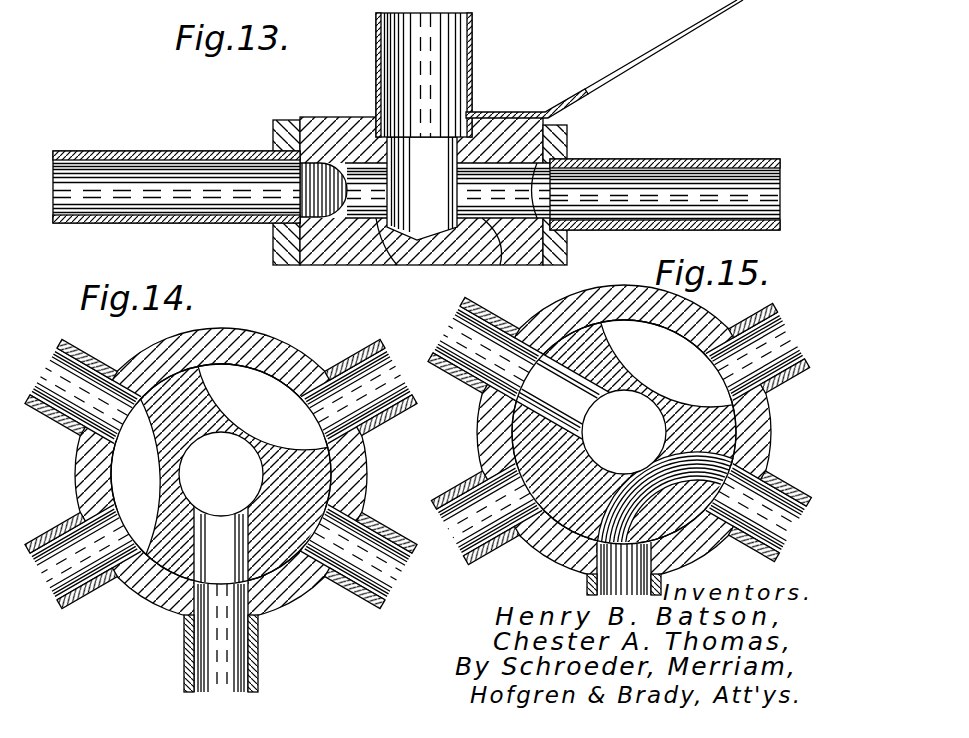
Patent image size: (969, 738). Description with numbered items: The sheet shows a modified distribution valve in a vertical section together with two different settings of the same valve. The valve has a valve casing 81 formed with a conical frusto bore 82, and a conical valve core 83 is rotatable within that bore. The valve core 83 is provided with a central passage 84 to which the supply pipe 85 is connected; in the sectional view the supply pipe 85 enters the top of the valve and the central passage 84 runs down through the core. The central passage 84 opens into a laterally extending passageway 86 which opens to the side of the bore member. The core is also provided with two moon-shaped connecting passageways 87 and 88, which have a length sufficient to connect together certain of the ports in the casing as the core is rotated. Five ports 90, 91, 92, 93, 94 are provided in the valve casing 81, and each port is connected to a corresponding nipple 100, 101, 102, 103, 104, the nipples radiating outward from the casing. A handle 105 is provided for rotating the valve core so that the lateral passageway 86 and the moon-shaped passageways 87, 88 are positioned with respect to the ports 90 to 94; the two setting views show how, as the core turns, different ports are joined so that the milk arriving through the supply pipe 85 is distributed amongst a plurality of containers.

In FIG. 13, the valve casing 81 is at (569, 141).
In FIG. 14, the valve casing 81 is at (293, 360).
In FIG. 15, the valve casing 81 is at (602, 303).
In FIG. 13, the conical frusto bore 82 is at (318, 118).
In FIG. 13, the conical valve core 83 is at (352, 135).
In FIG. 14, the conical valve core 83 is at (303, 490).
In FIG. 15, the conical valve core 83 is at (705, 432).
In FIG. 13, the central passage 84 is at (470, 108).
In FIG. 14, the central passage 84 is at (200, 437).
In FIG. 15, the central passage 84 is at (618, 477).
In FIG. 13, the supply pipe 85 is at (472, 33).
In FIG. 13, the laterally extending passageway 86 is at (490, 263).
In FIG. 14, the laterally extending passageway 86 is at (250, 548).
In FIG. 15, the laterally extending passageway 86 is at (530, 413).
In FIG. 14, the moon-shaped connecting passageway 87 is at (157, 453).
In FIG. 15, the moon-shaped connecting passageway 87 is at (697, 326).
In FIG. 13, the moon-shaped connecting passageway 88 is at (258, 219).
In FIG. 14, the moon-shaped connecting passageway 88 is at (233, 367).
In FIG. 15, the moon-shaped connecting passageway 88 is at (693, 550).
In FIG. 14, the port 90 is at (370, 432).
In FIG. 15, the port 90 is at (760, 398).
In FIG. 14, the port 91 is at (342, 590).
In FIG. 15, the port 91 is at (763, 487).
In FIG. 14, the port 92 is at (190, 633).
In FIG. 15, the port 92 is at (590, 563).
In FIG. 14, the port 93 is at (92, 600).
In FIG. 15, the port 93 is at (482, 470).
In FIG. 14, the port 94 is at (56, 432).
In FIG. 15, the port 94 is at (483, 394).
In FIG. 13, the nipple 100 is at (718, 160).
In FIG. 14, the nipple 100 is at (362, 357).
In FIG. 15, the nipple 100 is at (760, 322).
In FIG. 14, the nipple 101 is at (380, 537).
In FIG. 15, the nipple 101 is at (760, 548).
In FIG. 14, the nipple 102 is at (257, 673).
In FIG. 15, the nipple 102 is at (587, 587).
In FIG. 13, the nipple 103 is at (165, 151).
In FIG. 14, the nipple 103 is at (53, 537).
In FIG. 15, the nipple 103 is at (452, 500).
In FIG. 14, the nipple 104 is at (82, 358).
In FIG. 15, the nipple 104 is at (502, 328).
In FIG. 13, the handle 105 is at (623, 68).